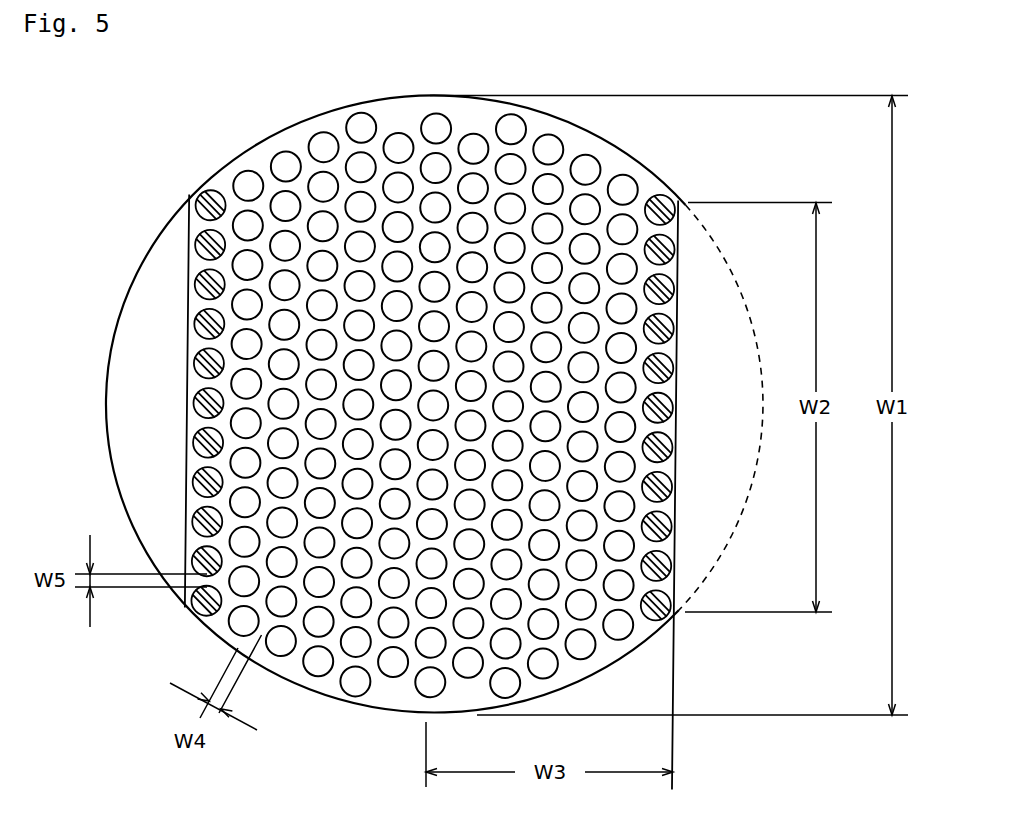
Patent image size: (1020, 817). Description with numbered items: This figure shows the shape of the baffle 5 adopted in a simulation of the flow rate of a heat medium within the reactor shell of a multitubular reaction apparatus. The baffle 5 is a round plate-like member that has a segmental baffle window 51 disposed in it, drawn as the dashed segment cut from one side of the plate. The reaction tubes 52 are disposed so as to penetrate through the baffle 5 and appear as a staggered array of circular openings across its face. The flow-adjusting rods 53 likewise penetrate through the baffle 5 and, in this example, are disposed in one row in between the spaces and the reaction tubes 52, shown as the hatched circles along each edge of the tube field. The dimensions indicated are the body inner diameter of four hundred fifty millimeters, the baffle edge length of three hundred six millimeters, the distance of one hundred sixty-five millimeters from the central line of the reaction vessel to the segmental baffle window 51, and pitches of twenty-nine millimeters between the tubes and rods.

The baffle 5 is at (92, 185).
The segmental baffle window 51 is at (716, 518).
The reaction tube 52 is at (244, 183).
The flow-adjusting rod 53 is at (210, 195).